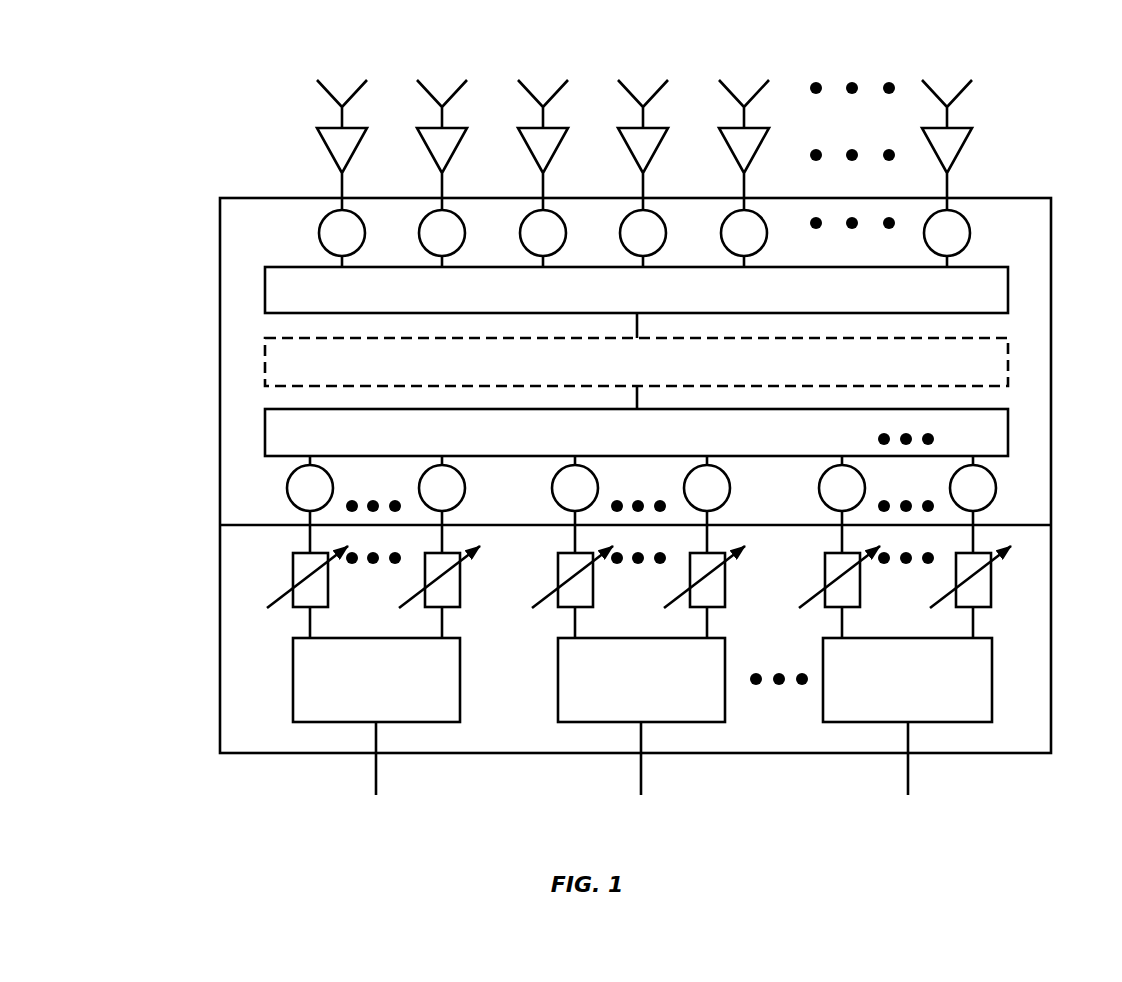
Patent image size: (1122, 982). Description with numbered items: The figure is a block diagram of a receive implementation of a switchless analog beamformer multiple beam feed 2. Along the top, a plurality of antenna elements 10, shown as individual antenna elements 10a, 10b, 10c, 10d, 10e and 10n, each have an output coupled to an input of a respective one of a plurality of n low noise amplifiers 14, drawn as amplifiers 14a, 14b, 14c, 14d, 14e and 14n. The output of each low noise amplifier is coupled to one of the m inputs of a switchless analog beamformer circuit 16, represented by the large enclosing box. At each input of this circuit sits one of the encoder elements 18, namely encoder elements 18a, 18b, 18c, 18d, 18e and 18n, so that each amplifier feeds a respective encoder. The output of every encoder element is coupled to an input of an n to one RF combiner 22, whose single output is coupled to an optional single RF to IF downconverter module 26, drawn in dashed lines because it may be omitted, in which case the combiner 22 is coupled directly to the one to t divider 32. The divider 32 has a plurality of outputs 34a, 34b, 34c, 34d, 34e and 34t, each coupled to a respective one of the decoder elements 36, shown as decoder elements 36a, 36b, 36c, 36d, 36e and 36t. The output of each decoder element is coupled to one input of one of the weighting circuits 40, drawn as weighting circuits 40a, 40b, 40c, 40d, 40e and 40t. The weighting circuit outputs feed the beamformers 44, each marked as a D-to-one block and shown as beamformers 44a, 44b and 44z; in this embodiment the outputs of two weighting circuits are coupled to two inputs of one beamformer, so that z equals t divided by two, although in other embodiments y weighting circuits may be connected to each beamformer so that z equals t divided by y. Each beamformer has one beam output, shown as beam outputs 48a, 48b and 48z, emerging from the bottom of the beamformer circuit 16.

The switchless analog beamformer multiple beam feed 2 is at (120, 96).
The antenna elements 10 is at (318, 58).
The antenna element 10a is at (342, 92).
The antenna element 10b is at (442, 92).
The antenna element 10c is at (543, 92).
The antenna element 10d is at (643, 92).
The antenna element 10e is at (744, 92).
The antenna element 10n is at (947, 92).
The low noise amplifiers 14 is at (318, 118).
The low noise amplifier 14a is at (345, 148).
The low noise amplifier 14b is at (445, 148).
The low noise amplifier 14c is at (546, 148).
The low noise amplifier 14d is at (646, 148).
The low noise amplifier 14e is at (747, 148).
The low noise amplifier 14n is at (950, 148).
The switchless analog beamformer circuit 16 is at (1051, 237).
The encoder elements 18 is at (305, 225).
The encoder element 18a is at (365, 240).
The encoder element 18b is at (465, 240).
The encoder element 18c is at (566, 240).
The encoder element 18d is at (666, 240).
The encoder element 18e is at (767, 240).
The encoder element 18n is at (970, 240).
The combiner 22 is at (265, 284).
The downconverter module 26 is at (265, 354).
The divider 32 is at (265, 425).
The divider output 34a is at (309, 445).
The divider output 34b is at (442, 445).
The divider output 34c is at (575, 445).
The divider output 34d is at (707, 445).
The divider output 34e is at (842, 445).
The divider output 34t is at (968, 445).
The decoder elements 36 is at (282, 495).
The decoder element 36a is at (327, 471).
The decoder element 36b is at (459, 471).
The decoder element 36c is at (592, 471).
The decoder element 36d is at (724, 471).
The decoder element 36e is at (859, 471).
The decoder element 36t is at (990, 471).
The weighting circuits 40 is at (285, 568).
The weighting circuit 40a is at (329, 576).
The weighting circuit 40b is at (461, 576).
The weighting circuit 40c is at (594, 576).
The weighting circuit 40d is at (726, 576).
The weighting circuit 40e is at (861, 576).
The weighting circuit 40t is at (992, 576).
The beamformers 44 is at (285, 678).
The beamformer 44a is at (409, 714).
The beamformer 44b is at (674, 714).
The beamformer 44z is at (941, 714).
The beam output 48a is at (375, 776).
The beam output 48b is at (641, 776).
The beam output 48z is at (908, 776).